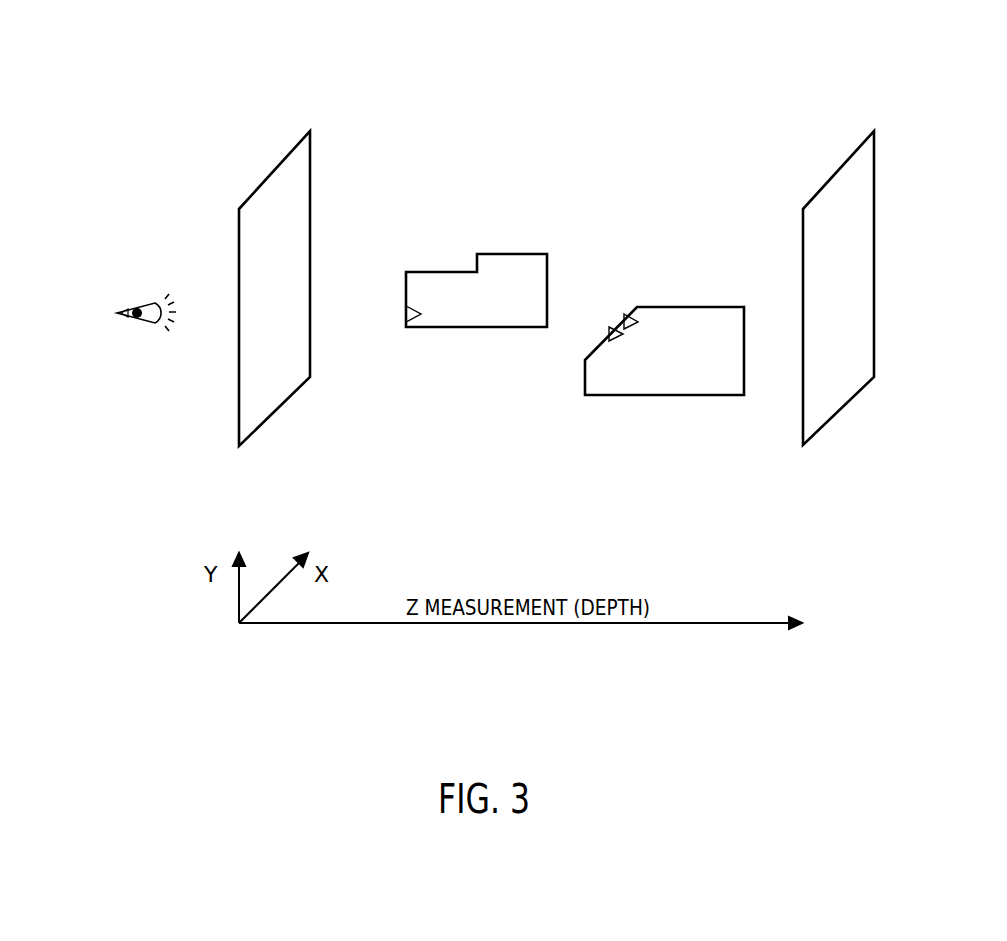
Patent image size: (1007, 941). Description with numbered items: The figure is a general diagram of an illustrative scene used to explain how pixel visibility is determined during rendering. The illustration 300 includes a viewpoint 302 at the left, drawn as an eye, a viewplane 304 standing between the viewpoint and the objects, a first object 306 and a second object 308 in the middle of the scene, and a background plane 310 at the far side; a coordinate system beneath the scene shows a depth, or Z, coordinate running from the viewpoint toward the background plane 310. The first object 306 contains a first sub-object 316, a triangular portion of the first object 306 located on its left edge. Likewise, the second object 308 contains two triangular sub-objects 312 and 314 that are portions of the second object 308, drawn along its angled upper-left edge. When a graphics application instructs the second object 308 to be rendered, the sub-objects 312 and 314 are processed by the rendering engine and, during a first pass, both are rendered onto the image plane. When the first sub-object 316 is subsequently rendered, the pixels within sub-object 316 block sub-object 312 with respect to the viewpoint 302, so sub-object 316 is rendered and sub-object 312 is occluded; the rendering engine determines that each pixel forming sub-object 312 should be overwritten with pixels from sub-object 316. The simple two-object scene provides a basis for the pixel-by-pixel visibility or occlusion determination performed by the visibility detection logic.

The illustration 300 is at (735, 55).
The viewpoint 302 is at (183, 407).
The viewplane 304 is at (400, 494).
The first object 306 is at (511, 283).
The second object 308 is at (679, 329).
The background plane 310 is at (908, 511).
The sub-object 312 is at (654, 299).
The sub-object 314 is at (590, 320).
The first sub-object 316 is at (379, 332).